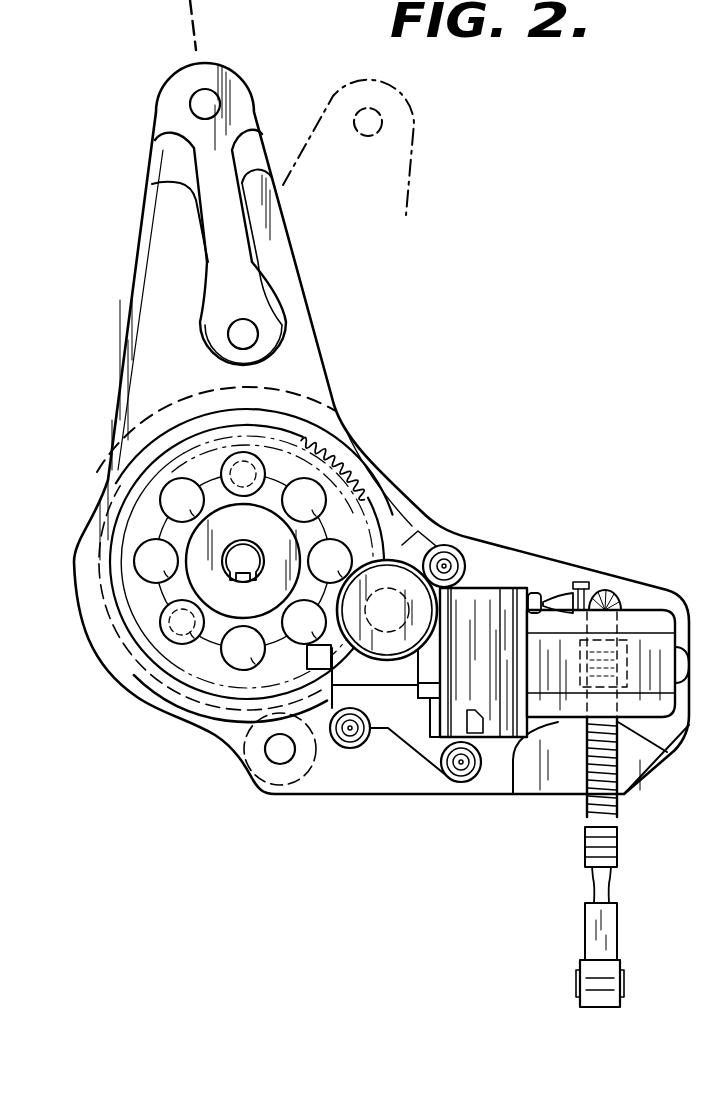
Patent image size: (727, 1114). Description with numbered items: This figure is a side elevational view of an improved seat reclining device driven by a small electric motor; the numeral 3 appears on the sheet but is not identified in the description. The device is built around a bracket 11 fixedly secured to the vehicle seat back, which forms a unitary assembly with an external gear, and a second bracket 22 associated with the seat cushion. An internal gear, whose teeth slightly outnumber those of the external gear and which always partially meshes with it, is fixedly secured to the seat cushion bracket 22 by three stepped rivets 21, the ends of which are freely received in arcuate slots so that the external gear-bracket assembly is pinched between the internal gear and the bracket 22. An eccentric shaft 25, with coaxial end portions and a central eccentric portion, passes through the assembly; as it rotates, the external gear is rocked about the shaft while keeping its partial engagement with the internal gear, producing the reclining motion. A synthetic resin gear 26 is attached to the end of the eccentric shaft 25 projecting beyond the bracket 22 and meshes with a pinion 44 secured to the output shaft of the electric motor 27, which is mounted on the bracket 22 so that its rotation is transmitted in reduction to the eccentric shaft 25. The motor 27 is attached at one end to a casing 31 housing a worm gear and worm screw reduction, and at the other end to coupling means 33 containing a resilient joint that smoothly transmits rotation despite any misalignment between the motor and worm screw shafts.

The seat adjuster drive mechanism 3 is at (293, 815).
The bracket 11 is at (140, 278).
The stepped rivets 21 is at (307, 407).
The bracket 22 is at (540, 570).
The eccentric shaft 25 is at (242, 563).
The synthetic resin gear 26 is at (312, 463).
The electric motor 27 is at (632, 617).
The casing 31 is at (389, 662).
The coupling means 33 is at (483, 603).
The pinion 44 is at (437, 525).